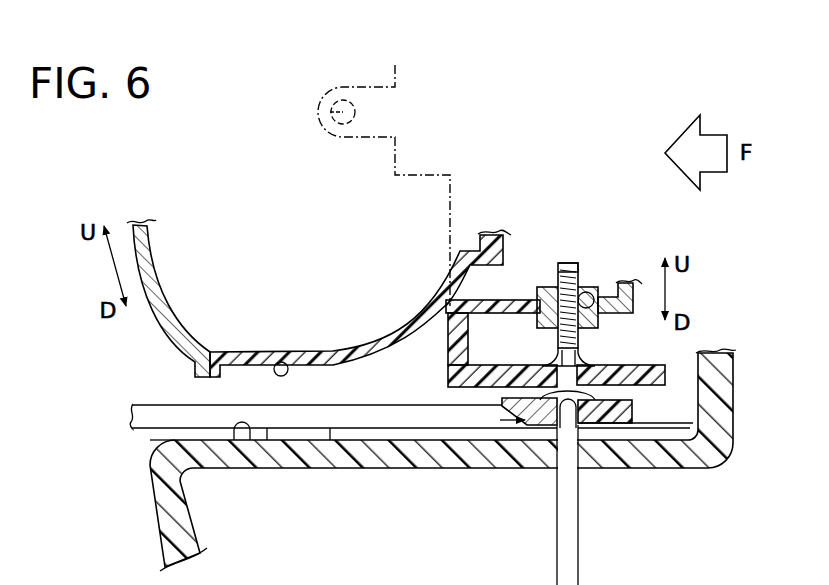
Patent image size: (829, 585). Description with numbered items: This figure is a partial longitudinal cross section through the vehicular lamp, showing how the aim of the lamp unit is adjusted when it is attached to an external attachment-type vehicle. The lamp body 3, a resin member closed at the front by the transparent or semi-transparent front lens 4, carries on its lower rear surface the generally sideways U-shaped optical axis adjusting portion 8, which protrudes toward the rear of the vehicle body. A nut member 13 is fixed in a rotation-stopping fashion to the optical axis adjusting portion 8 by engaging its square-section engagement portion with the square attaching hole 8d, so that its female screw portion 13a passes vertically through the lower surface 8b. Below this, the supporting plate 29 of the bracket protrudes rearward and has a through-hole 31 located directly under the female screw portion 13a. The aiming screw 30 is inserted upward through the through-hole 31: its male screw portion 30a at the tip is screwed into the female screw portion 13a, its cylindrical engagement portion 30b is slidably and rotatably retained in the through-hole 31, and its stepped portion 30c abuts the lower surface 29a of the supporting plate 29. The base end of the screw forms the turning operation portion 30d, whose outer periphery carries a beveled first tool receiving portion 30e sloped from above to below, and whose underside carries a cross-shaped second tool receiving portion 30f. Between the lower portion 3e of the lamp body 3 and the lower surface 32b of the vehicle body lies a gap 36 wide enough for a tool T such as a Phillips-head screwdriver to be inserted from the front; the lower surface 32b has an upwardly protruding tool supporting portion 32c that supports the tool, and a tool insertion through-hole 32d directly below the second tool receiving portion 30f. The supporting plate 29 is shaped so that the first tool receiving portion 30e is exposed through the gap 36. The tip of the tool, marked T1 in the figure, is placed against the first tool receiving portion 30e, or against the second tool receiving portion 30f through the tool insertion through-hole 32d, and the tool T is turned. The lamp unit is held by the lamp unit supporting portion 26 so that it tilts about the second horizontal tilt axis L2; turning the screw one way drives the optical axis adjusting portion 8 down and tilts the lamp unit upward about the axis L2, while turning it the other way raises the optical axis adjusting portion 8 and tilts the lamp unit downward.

The lamp body 3 is at (222, 352).
The lower portion of the lamp body 3e is at (281, 362).
The front lens 4 is at (158, 270).
The optical axis adjusting portion 8 is at (476, 294).
The lower surface 8b is at (460, 322).
The attaching hole 8d is at (600, 298).
The nut member 13 is at (548, 290).
The female screw portion 13a is at (578, 288).
The lamp unit supporting portion 26 is at (364, 84).
The supporting plate 29 is at (672, 364).
The lower surface of the supporting plate 29a is at (452, 388).
The aiming screw 30 is at (632, 437).
The male screw portion 30a is at (567, 262).
The cylindrical engagement portion 30b is at (597, 366).
The stepped portion 30c is at (597, 390).
The turning operation portion 30d is at (593, 428).
The first tool receiving portion 30e is at (698, 413).
The second tool receiving portion 30f is at (535, 427).
The through-hole 31 is at (555, 370).
The lower surface of the vehicle body 32b is at (241, 442).
The tool supporting portion 32c is at (300, 440).
The tool insertion through-hole 32d is at (548, 462).
The gap 36 is at (166, 438).
The tool T is at (165, 404).
The tool tip T1 is at (513, 428).
The second horizontal tilt axis L2 is at (318, 108).